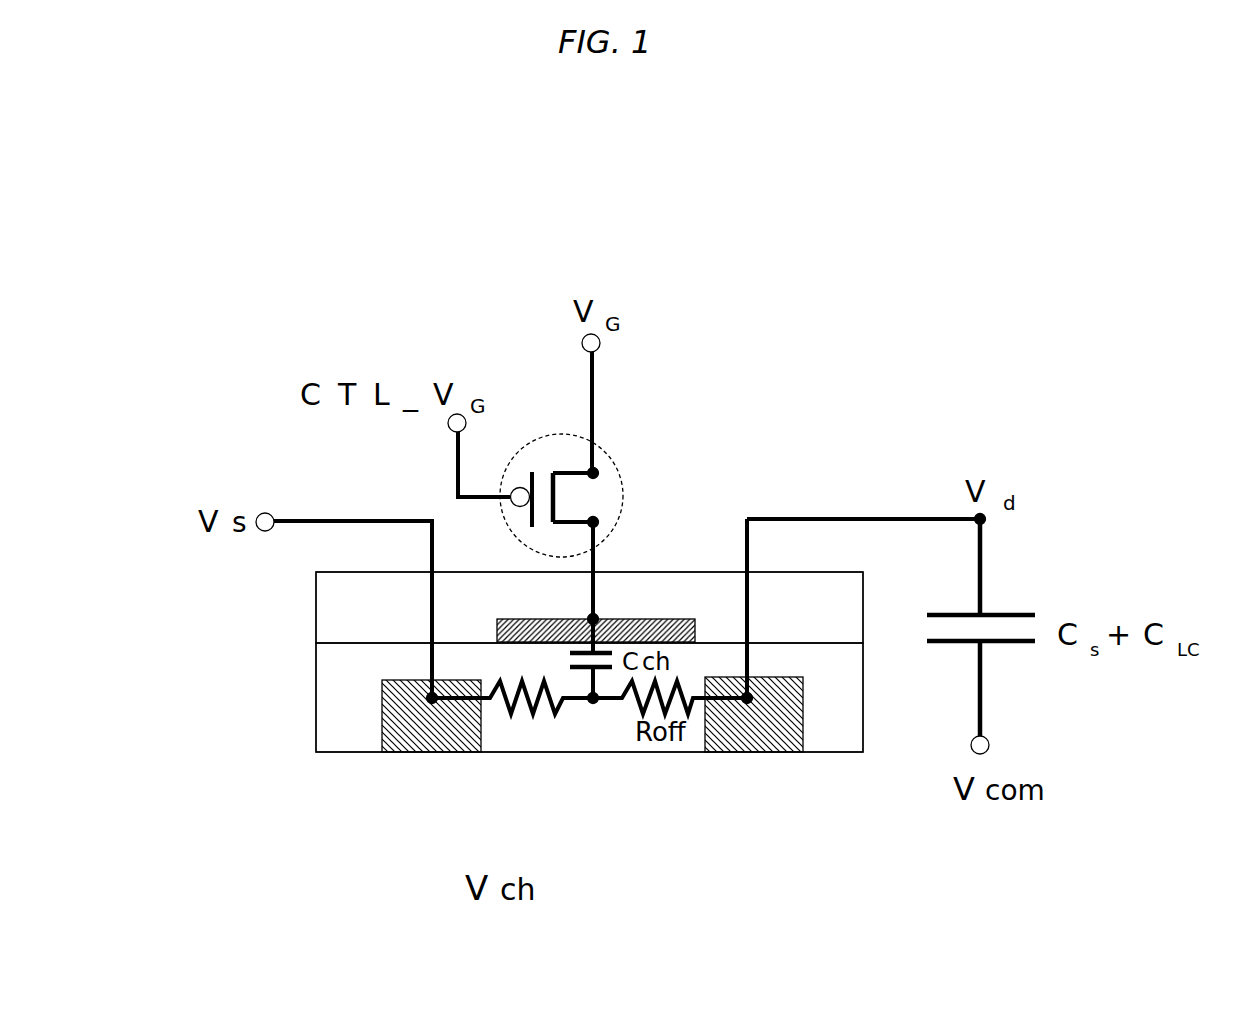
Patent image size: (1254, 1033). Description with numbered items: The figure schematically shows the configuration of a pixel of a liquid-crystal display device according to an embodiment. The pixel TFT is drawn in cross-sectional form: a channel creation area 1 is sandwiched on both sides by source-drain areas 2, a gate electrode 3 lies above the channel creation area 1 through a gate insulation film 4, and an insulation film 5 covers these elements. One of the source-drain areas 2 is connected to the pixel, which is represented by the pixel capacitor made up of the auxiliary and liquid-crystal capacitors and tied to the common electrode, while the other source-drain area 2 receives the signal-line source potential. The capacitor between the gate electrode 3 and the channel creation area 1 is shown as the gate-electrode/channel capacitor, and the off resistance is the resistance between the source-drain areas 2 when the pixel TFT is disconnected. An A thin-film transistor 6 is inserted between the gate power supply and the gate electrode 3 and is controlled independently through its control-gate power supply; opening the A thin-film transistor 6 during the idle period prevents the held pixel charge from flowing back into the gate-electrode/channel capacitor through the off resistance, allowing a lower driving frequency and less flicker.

The channel creation area 1 is at (593, 737).
The source-drain areas 2 is at (453, 733).
The gate electrode 3 is at (643, 618).
The gate insulation film 4 is at (350, 700).
The insulation film 5 is at (350, 606).
The A thin-film transistor 6 is at (620, 453).